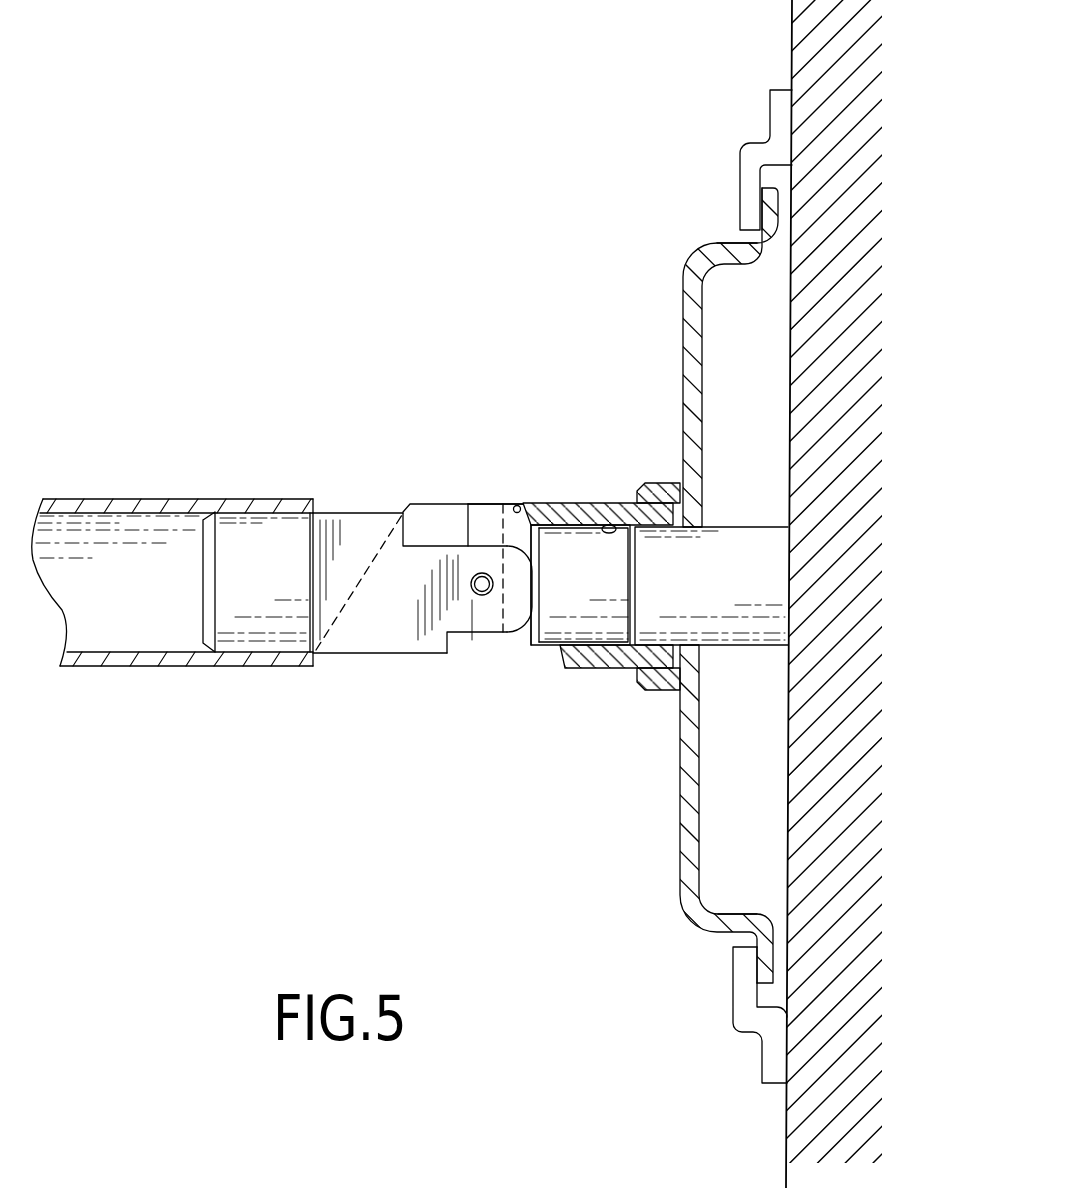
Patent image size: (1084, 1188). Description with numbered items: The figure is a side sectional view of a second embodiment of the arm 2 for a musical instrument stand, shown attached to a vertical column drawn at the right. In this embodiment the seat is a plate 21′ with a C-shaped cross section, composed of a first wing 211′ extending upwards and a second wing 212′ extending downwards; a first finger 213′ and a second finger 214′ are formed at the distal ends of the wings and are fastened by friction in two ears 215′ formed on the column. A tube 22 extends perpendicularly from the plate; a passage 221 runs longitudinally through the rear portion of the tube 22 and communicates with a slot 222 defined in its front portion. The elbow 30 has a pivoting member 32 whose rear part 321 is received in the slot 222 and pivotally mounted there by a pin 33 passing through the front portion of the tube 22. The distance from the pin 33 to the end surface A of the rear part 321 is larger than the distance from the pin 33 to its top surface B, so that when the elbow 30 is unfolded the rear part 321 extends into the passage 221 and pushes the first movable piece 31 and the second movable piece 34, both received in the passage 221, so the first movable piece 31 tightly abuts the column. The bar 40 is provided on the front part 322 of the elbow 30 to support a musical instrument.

The arm 2 is at (545, 513).
The plate 21′ is at (692, 363).
The first wing 211′ is at (741, 252).
The second wing 212′ is at (729, 921).
The first finger 213′ is at (768, 216).
The second finger 214′ is at (767, 957).
The ears 215′ is at (742, 194).
The tube 22 is at (602, 662).
The passage 221 is at (609, 530).
The slot 222 is at (517, 506).
The elbow 30 is at (418, 559).
The first movable piece 31 is at (728, 537).
The pivoting member 32 is at (349, 530).
The rear part 321 is at (490, 626).
The front part 322 is at (263, 644).
The pin 33 is at (474, 586).
The second movable piece 34 is at (572, 538).
The bar 40 is at (142, 500).
The end surface A is at (535, 592).
The top surface B is at (468, 545).